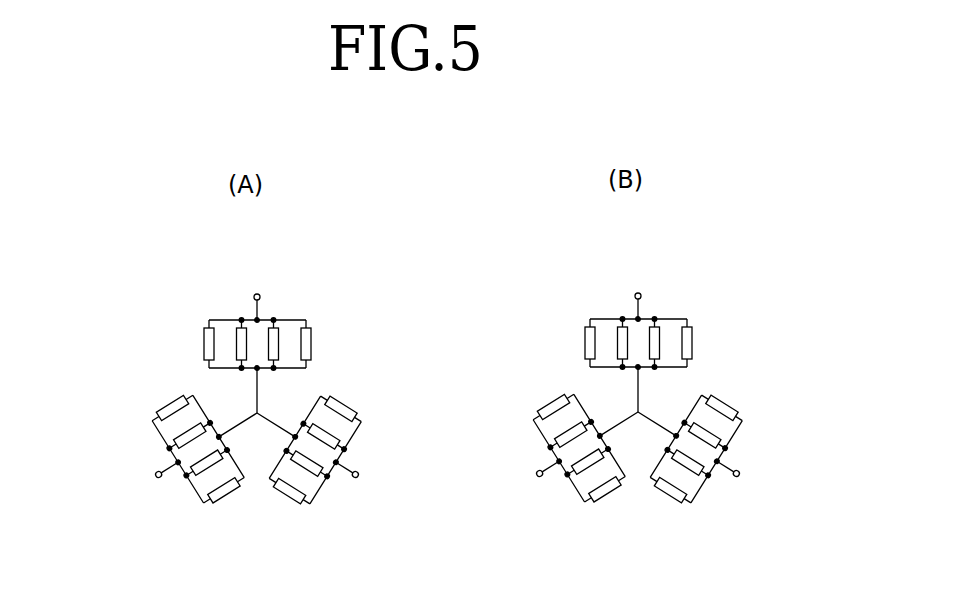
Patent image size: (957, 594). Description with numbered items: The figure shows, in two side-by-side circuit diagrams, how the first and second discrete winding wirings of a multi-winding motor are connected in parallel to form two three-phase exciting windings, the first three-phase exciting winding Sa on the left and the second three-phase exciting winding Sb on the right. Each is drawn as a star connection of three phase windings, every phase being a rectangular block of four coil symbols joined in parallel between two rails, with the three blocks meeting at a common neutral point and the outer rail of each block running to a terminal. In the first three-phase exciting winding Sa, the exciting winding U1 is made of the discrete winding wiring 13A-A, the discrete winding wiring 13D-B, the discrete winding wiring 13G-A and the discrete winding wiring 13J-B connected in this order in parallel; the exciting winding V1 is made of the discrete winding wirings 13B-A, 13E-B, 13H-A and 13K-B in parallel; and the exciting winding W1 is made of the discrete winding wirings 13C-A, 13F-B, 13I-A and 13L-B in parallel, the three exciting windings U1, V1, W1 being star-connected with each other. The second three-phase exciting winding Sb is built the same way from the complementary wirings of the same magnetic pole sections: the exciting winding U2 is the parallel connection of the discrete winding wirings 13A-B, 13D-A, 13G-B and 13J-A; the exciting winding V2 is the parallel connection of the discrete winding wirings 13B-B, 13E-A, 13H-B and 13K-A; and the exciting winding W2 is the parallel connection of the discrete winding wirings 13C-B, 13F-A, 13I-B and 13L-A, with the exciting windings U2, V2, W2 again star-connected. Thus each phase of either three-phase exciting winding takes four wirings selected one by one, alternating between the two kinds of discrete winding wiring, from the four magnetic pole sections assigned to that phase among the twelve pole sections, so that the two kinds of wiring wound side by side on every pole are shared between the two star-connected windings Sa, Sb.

The first three-phase exciting winding Sa is at (173, 314).
The second three-phase exciting winding Sb is at (554, 313).
The exciting winding U1 is at (268, 285).
The exciting winding U2 is at (649, 284).
The exciting winding V1 is at (377, 480).
The exciting winding V2 is at (758, 479).
The exciting winding W1 is at (148, 463).
The exciting winding W2 is at (529, 462).
The discrete winding wiring A 13A-A is at (203, 342).
The discrete winding wiring B 13A-B is at (584, 341).
The discrete winding wiring A 13B-A is at (340, 402).
The discrete winding wiring B 13B-B is at (721, 401).
The discrete winding wiring A 13C-A is at (230, 502).
The discrete winding wiring B 13C-B is at (611, 501).
The discrete winding wiring A 13D-A is at (619, 334).
The discrete winding wiring B 13D-B is at (238, 335).
The discrete winding wiring A 13E-A is at (733, 439).
The discrete winding wiring B 13E-B is at (352, 440).
The discrete winding wiring A 13F-A is at (568, 484).
The discrete winding wiring B 13F-B is at (187, 485).
The discrete winding wiring A 13G-A is at (275, 335).
The discrete winding wiring B 13G-B is at (656, 334).
The discrete winding wiring A 13H-A is at (328, 483).
The discrete winding wiring B 13H-B is at (709, 482).
The discrete winding wiring A 13I-A is at (170, 440).
The discrete winding wiring B 13I-B is at (551, 439).
The discrete winding wiring A 13J-A is at (691, 342).
The discrete winding wiring B 13J-B is at (310, 343).
The discrete winding wiring A 13K-A is at (678, 501).
The discrete winding wiring B 13K-B is at (297, 502).
The discrete winding wiring A 13L-A is at (551, 409).
The discrete winding wiring B 13L-B is at (170, 410).